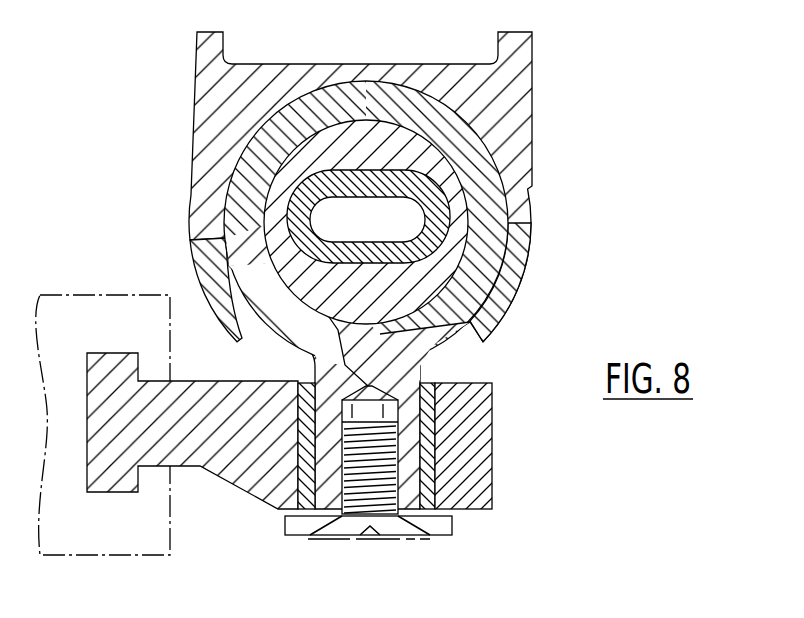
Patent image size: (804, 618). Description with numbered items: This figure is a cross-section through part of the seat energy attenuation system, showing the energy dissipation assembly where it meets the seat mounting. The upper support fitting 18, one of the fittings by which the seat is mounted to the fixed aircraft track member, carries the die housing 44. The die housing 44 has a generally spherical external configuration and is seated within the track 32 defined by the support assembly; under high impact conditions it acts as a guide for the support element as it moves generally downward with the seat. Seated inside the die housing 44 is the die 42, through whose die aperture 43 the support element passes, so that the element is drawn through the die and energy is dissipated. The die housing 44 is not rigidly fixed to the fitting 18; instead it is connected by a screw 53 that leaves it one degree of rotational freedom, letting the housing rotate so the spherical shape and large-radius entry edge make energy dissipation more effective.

The upper support fitting 18 is at (108, 368).
The track 32 is at (184, 198).
The die 42 is at (387, 135).
The die aperture 43 is at (450, 186).
The die housing 44 is at (500, 207).
The screw 53 is at (418, 539).